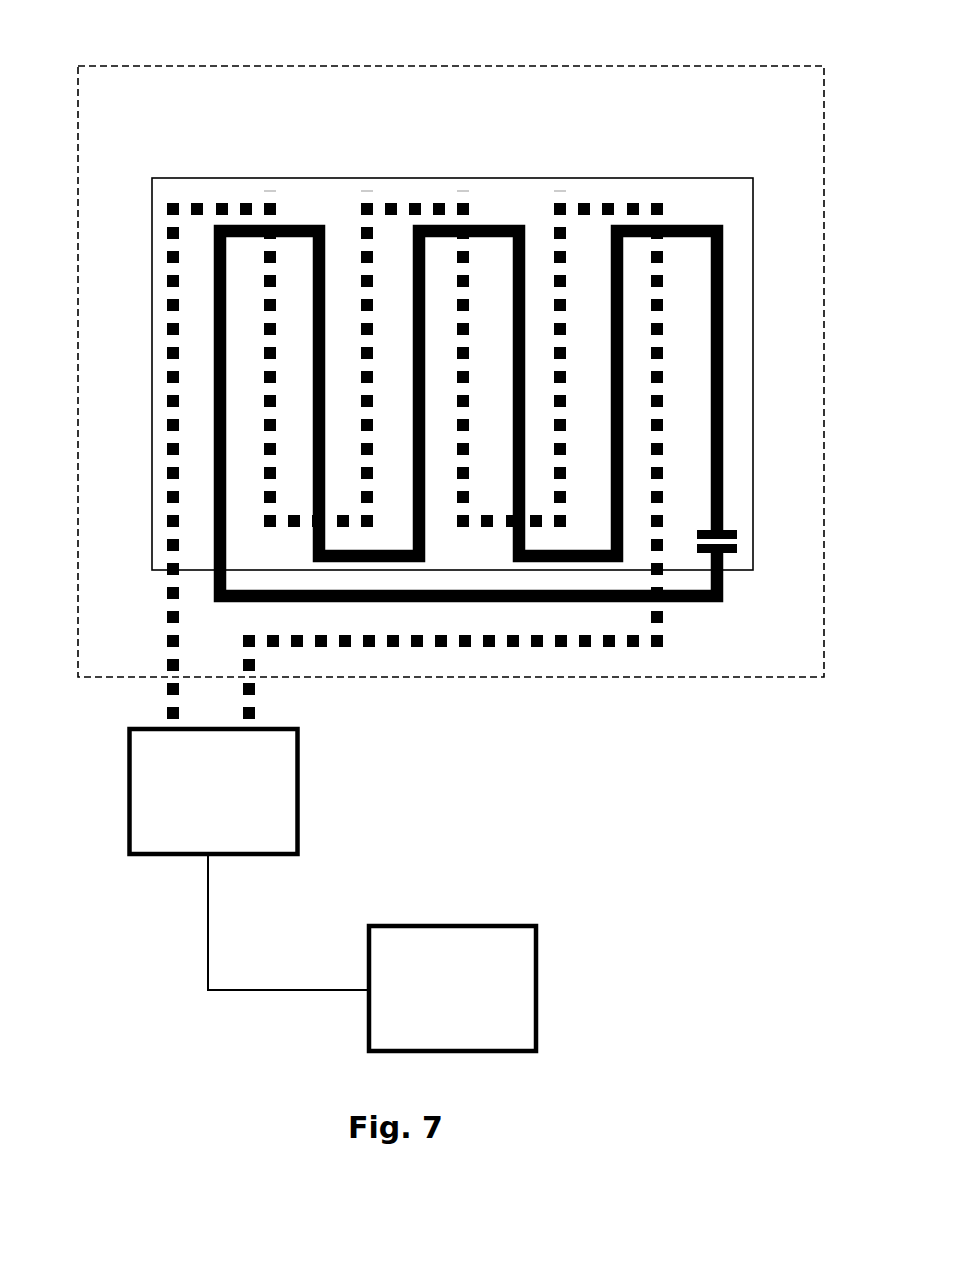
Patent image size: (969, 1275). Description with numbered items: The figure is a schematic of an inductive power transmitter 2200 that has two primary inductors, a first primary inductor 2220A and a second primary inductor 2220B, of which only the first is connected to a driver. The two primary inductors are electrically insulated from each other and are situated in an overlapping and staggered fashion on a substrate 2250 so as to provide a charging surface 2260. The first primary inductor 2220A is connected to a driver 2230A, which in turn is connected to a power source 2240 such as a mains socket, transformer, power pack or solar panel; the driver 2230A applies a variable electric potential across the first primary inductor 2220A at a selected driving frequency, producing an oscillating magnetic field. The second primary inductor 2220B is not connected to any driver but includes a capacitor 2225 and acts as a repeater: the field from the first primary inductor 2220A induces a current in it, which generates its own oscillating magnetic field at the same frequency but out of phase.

The inductive power transmitter 2200 is at (788, 87).
The first primary inductor 2220A is at (168, 302).
The second primary inductor 2220B is at (723, 339).
The capacitor 2225 is at (732, 553).
The driver 2230A is at (127, 830).
The power source 2240 is at (538, 983).
The substrate 2250 is at (502, 197).
The charging surface 2260 is at (313, 178).